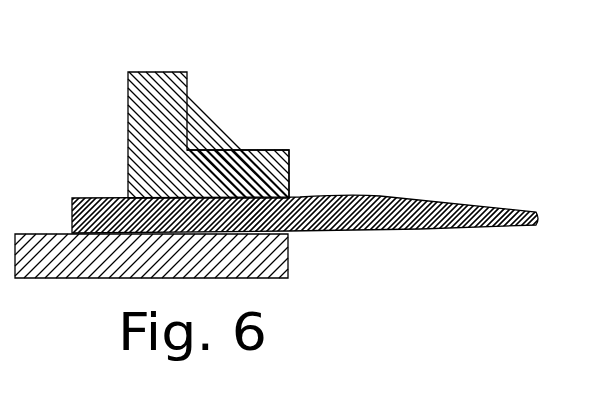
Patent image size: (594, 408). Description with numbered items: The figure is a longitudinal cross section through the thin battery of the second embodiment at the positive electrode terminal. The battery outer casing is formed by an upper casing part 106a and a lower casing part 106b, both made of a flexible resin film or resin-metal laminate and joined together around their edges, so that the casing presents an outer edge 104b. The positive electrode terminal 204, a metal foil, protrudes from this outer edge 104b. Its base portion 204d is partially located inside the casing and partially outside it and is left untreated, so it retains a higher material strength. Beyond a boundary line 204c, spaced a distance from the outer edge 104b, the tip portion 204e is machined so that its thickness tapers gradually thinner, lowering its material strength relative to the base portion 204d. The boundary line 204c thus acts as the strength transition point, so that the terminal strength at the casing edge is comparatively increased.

The outer edge 104b is at (293, 177).
The upper casing part 106a is at (153, 88).
The lower casing part 106b is at (45, 233).
The positive electrode terminal 204 is at (385, 232).
The boundary line 204c is at (377, 195).
The base portion 204d is at (368, 197).
The tip portion 204e is at (437, 203).